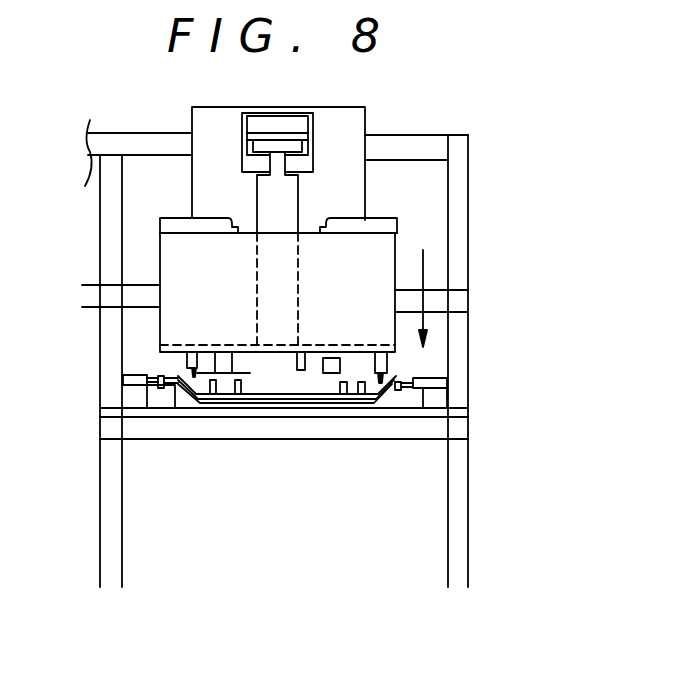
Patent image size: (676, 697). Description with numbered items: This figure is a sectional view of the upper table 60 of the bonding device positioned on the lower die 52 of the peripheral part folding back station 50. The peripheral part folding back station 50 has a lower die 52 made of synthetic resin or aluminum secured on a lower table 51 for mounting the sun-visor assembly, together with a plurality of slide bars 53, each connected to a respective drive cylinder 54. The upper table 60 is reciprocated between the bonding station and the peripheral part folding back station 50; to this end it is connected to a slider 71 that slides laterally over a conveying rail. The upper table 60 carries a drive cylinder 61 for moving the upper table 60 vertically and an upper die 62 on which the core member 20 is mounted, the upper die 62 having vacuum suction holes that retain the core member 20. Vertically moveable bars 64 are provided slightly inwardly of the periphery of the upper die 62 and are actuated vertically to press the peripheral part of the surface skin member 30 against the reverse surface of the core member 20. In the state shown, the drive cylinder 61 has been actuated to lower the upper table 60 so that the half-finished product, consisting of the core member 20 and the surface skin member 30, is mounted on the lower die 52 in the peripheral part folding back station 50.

The core member 20 is at (263, 393).
The surface skin member 30 is at (313, 400).
The peripheral part folding back station 50 is at (277, 525).
The lower table 51 is at (235, 413).
The lower die 52 is at (347, 373).
The slide bars 53 is at (163, 386).
The drive cylinders 54 is at (123, 381).
The upper table 60 is at (208, 285).
The drive cylinder 61 is at (265, 195).
The upper die 62 is at (288, 383).
The vertically moveable bars 64 is at (180, 371).
The slider 71 is at (344, 137).